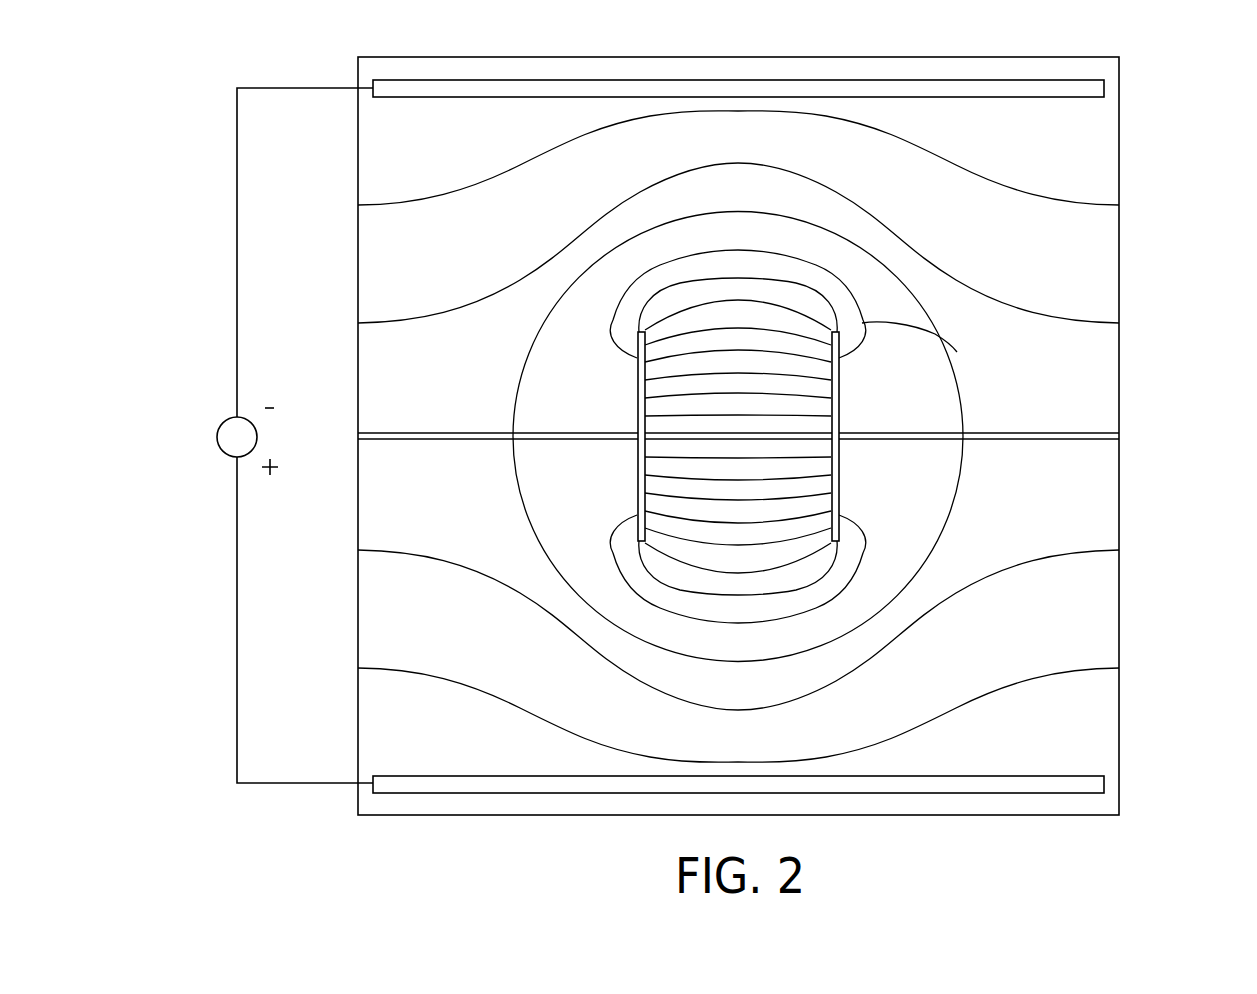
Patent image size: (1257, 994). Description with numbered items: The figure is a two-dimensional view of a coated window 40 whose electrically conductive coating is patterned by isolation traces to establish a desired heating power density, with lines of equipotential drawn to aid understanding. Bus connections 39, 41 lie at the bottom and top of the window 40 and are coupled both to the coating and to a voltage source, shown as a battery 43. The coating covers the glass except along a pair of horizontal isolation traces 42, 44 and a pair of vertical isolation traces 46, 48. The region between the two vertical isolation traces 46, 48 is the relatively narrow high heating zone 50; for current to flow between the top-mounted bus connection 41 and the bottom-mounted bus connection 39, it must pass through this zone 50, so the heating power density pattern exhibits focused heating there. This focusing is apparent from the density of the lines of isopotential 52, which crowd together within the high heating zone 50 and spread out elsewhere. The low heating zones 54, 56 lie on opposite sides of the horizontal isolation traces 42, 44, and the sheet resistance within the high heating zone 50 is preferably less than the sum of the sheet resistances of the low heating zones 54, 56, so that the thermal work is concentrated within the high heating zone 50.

The bus connection 39 is at (390, 785).
The window 40 is at (1168, 150).
The bus connection 41 is at (386, 87).
The horizontal isolation trace 42 is at (1088, 438).
The battery 43 is at (222, 456).
The horizontal isolation trace 44 is at (400, 440).
The vertical isolation trace 46 is at (640, 480).
The vertical isolation trace 48 is at (838, 480).
The high heating zone 50 is at (827, 412).
The lines of isopotential 52 is at (954, 368).
The low heating zone 54 is at (1059, 159).
The low heating zone 56 is at (1059, 749).